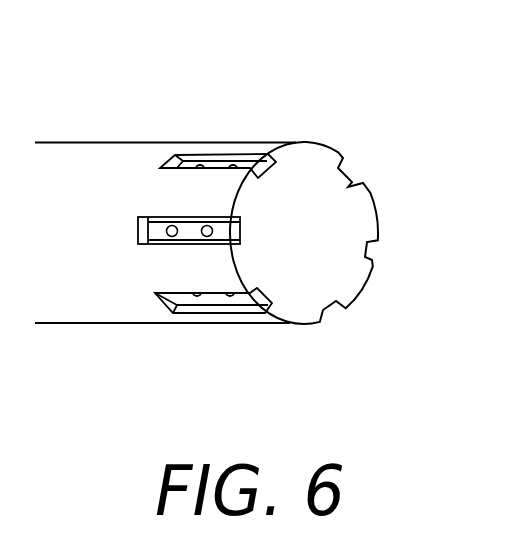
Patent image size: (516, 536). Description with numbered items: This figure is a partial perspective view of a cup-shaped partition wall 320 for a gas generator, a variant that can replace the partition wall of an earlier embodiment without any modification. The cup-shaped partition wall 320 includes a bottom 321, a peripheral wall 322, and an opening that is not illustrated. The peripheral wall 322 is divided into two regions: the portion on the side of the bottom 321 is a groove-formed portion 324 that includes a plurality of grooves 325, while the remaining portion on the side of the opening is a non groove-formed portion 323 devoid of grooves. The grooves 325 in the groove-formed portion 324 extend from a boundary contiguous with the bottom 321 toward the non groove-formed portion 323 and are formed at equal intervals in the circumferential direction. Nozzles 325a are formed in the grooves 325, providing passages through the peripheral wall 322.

The cup-shaped partition wall 320 is at (176, 172).
The bottom 321 is at (317, 218).
The peripheral wall 322 is at (165, 172).
The non groove-formed portion 323 is at (78, 141).
The groove-formed portion 324 is at (210, 141).
The grooves 325 is at (292, 237).
The nozzles 325a is at (213, 231).